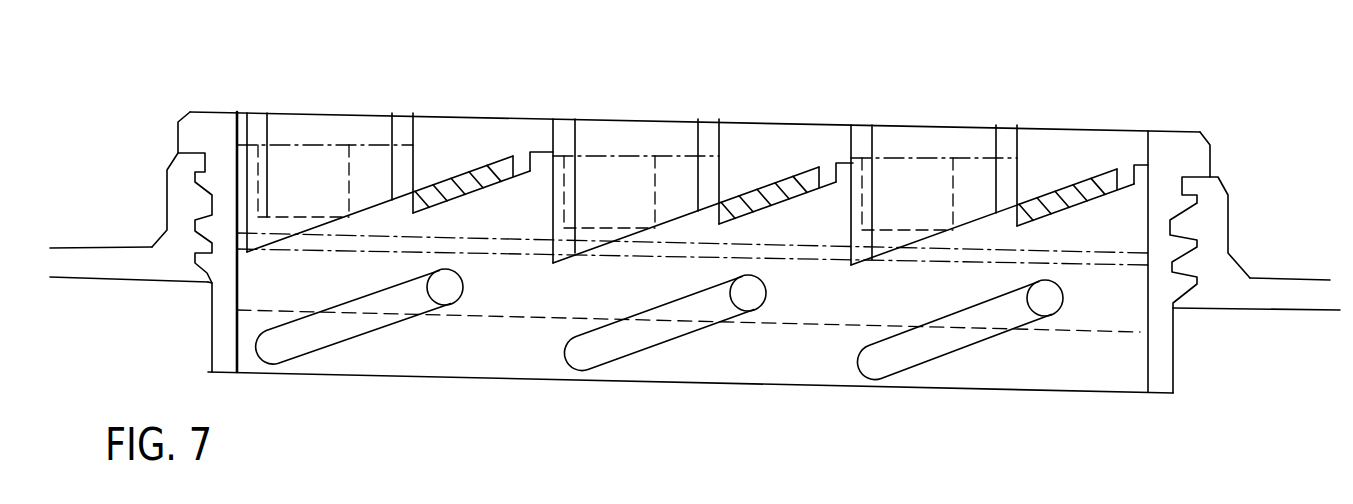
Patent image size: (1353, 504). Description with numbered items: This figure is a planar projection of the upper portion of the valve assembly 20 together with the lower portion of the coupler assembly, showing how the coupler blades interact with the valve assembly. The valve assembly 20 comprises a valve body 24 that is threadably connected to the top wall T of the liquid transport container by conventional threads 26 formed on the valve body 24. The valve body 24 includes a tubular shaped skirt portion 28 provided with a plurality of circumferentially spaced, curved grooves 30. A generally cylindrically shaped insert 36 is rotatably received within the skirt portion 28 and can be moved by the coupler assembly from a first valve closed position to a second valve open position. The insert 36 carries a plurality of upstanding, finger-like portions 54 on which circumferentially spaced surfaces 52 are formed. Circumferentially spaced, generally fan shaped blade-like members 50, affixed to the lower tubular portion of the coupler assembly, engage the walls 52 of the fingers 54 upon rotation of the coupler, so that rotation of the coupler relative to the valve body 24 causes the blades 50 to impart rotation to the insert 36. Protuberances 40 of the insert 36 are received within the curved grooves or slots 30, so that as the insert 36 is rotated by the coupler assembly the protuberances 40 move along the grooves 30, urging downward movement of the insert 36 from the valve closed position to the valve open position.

The valve assembly 20 is at (1200, 103).
The valve body 24 is at (213, 103).
The threads 26 is at (210, 225).
The skirt portion 28 is at (1173, 360).
The curved grooves 30 is at (360, 333).
The insert 36 is at (302, 140).
The protuberances 40 is at (457, 288).
The blade-like members 50 is at (483, 170).
The surfaces 52 is at (413, 135).
The finger-like portions 54 is at (904, 160).
The top wall T is at (1273, 278).